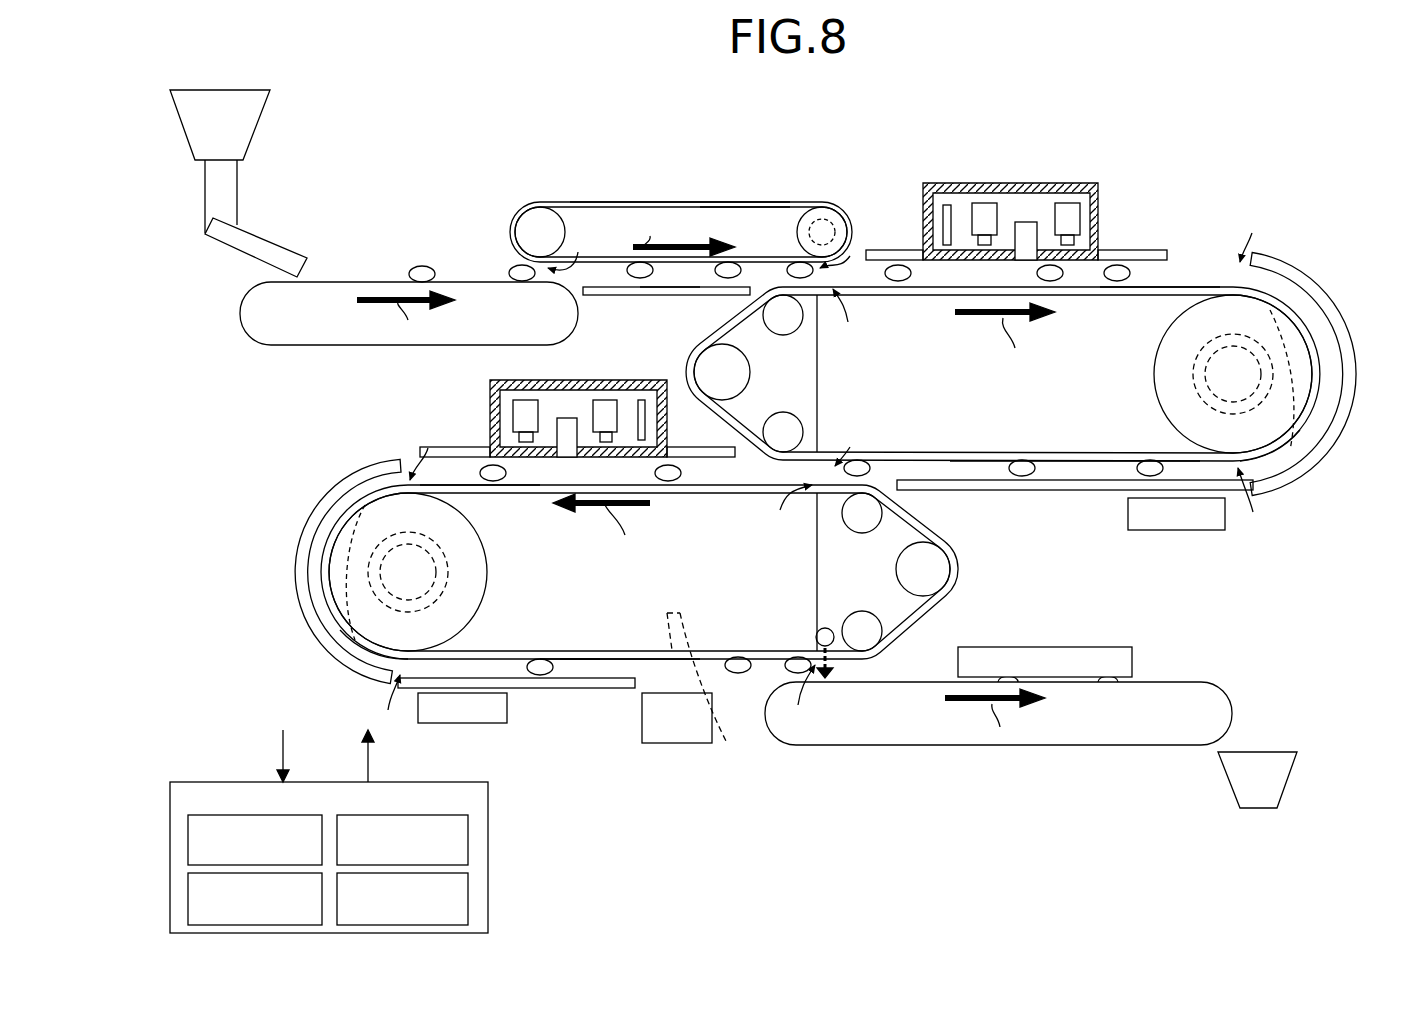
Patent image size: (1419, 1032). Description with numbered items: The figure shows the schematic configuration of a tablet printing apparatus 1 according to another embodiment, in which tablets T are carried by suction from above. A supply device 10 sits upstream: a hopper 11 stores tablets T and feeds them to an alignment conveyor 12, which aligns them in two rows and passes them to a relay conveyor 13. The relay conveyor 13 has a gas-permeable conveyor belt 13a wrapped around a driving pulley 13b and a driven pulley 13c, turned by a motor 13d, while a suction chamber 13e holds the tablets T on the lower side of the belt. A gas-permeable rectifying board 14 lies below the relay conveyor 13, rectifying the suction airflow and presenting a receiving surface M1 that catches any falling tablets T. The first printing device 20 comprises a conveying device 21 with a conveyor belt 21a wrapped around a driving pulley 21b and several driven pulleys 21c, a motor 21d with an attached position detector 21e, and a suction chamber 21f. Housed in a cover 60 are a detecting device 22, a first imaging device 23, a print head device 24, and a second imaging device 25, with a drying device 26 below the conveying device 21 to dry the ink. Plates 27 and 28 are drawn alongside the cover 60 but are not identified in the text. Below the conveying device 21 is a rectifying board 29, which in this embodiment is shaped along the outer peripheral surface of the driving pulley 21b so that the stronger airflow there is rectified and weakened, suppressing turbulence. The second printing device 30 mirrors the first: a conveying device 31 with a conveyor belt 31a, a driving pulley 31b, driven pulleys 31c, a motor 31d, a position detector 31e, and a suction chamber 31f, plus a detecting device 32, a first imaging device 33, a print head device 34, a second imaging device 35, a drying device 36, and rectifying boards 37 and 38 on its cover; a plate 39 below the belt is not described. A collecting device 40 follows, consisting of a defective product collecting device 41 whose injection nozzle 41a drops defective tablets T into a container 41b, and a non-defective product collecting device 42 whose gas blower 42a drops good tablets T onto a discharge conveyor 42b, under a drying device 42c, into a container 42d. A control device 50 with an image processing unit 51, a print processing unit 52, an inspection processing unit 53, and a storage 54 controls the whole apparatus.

The tablet printing apparatus 1 is at (373, 112).
The supply device 10 is at (557, 155).
The hopper 11 is at (240, 145).
The alignment conveyor 12 is at (315, 282).
The relay conveyor 13 is at (680, 192).
The conveyor belt 13a is at (600, 202).
The driving pulley 13b is at (828, 215).
The driven pulley 13c is at (538, 222).
The motor 13d is at (835, 226).
The suction chamber 13e is at (740, 212).
The rectifying board 14 is at (608, 296).
The first printing device 20 is at (1135, 165).
The conveying device 21 is at (1245, 252).
The conveyor belt 21a is at (1178, 285).
The driving pulley 21b is at (1292, 295).
The driven pulleys 21c is at (705, 358).
The motor 21d is at (1275, 330).
The position detector 21e is at (1313, 462).
The suction chamber 21f is at (1108, 442).
The detecting device 22 is at (946, 205).
The first imaging device 23 is at (978, 205).
The print head device 24 is at (1025, 225).
The second imaging device 25 is at (1066, 205).
The drying device 26 is at (1178, 530).
The guide plate 27 is at (878, 252).
The guide plate 28 is at (1140, 256).
The rectifying board 29 is at (1008, 490).
The second printing device 30 is at (560, 760).
The conveying device 31 is at (328, 425).
The conveyor belt 31a is at (405, 485).
The driving pulley 31b is at (340, 472).
The driven pulleys 31c is at (857, 527).
The motor 31d is at (325, 525).
The position detector 31e is at (330, 650).
The suction chamber 31f is at (605, 652).
The detecting device 32 is at (642, 403).
The first imaging device 33 is at (607, 403).
The print head device 34 is at (565, 420).
The second imaging device 35 is at (522, 403).
The drying device 36 is at (480, 725).
The rectifying board 37 is at (676, 447).
The rectifying board 38 is at (452, 447).
The guide plate 39 is at (518, 690).
The collecting device 40 is at (780, 835).
The defective product collecting device 41 is at (757, 787).
The injection nozzle 41a is at (708, 696).
The container 41b is at (673, 743).
The non-defective product collecting device 42 is at (845, 770).
The gas blower 42a is at (832, 648).
The discharge conveyor 42b is at (922, 735).
The drying device 42c is at (1118, 652).
The container 42d is at (1275, 757).
The control device 50 is at (420, 782).
The image processing unit 51 is at (188, 840).
The print processing unit 52 is at (468, 840).
The inspection processing unit 53 is at (188, 898).
The storage 54 is at (468, 898).
The cover 60 is at (930, 188).
The tablet T is at (424, 266).
The receiving surface M1 is at (655, 285).